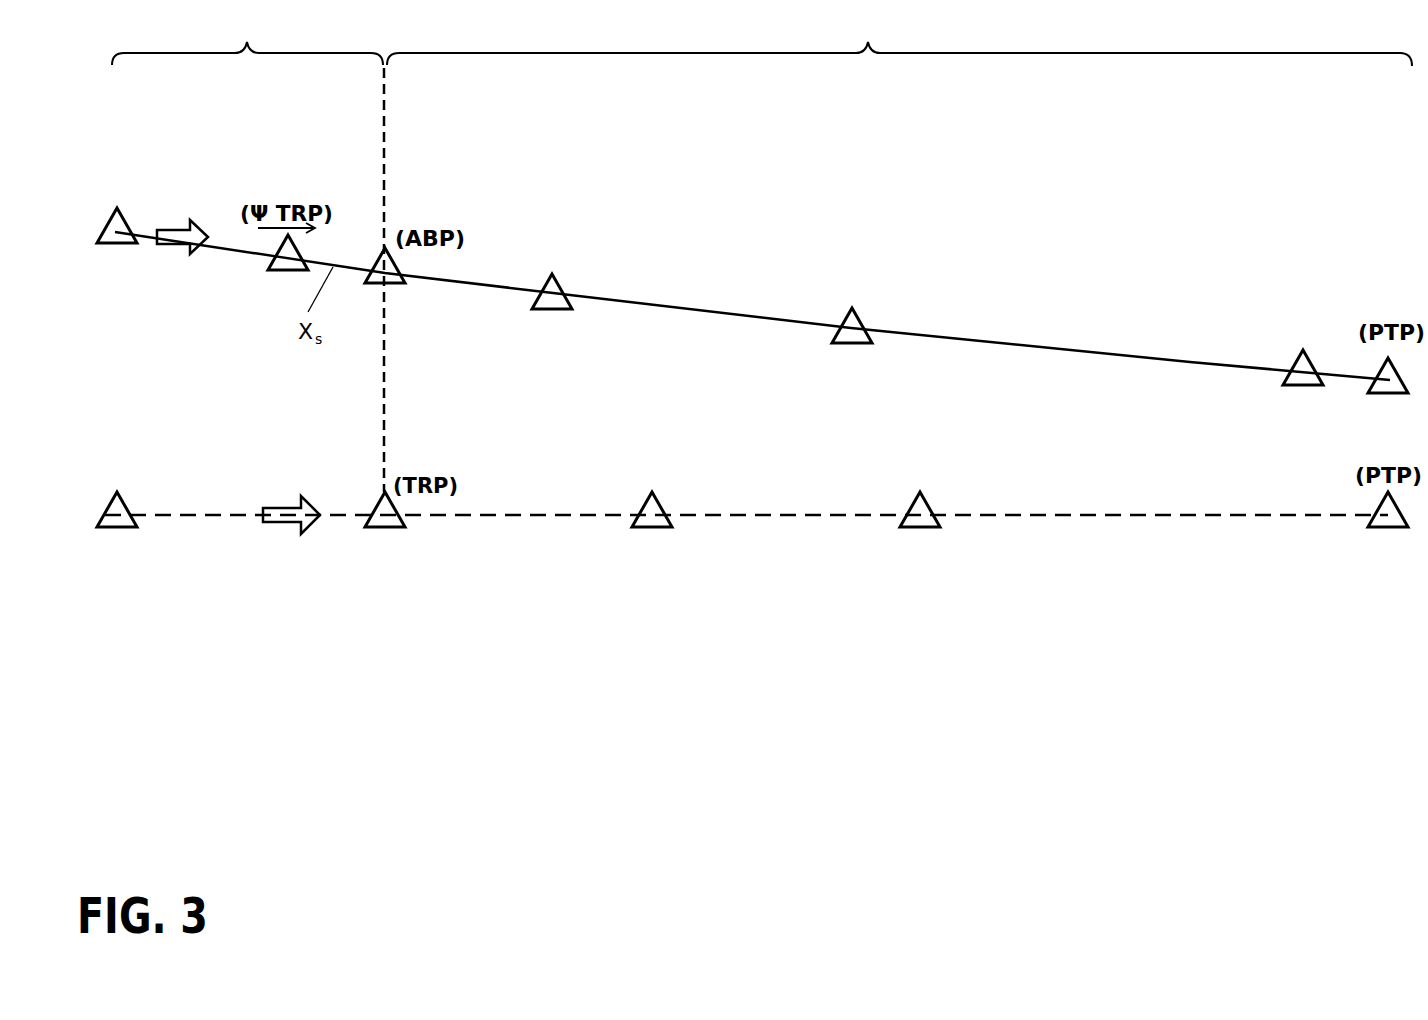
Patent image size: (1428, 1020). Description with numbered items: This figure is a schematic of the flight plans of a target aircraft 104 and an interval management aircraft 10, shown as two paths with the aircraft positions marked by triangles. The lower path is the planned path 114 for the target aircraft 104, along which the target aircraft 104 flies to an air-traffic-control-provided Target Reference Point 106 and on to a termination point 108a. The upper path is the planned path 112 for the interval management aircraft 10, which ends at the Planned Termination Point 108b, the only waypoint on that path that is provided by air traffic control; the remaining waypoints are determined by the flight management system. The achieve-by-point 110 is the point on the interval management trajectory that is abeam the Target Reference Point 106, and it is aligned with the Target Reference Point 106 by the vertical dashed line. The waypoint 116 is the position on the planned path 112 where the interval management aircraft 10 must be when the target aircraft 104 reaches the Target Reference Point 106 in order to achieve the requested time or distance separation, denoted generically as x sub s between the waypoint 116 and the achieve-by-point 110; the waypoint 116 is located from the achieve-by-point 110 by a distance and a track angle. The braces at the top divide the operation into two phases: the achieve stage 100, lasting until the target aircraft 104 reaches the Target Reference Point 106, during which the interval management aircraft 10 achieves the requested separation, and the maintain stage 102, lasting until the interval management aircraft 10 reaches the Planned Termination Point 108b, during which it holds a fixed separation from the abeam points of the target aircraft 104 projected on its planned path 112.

The IM aircraft 10 is at (175, 230).
The achieve stage 100 is at (247, 39).
The maintain stage 102 is at (899, 39).
The target aircraft 104 is at (290, 522).
The Target Reference Point (TRP) 106 is at (388, 527).
The Planned Termination Point (PTP) on target aircraft's path 108a is at (1388, 527).
The Planned Termination Point (PTP) 108b is at (1382, 367).
The achieve-by-point (ABP) 110 is at (380, 250).
The planned path of the IM aircraft 112 is at (700, 313).
The planned path of the target aircraft 114 is at (813, 517).
The ABP01 116 is at (287, 272).